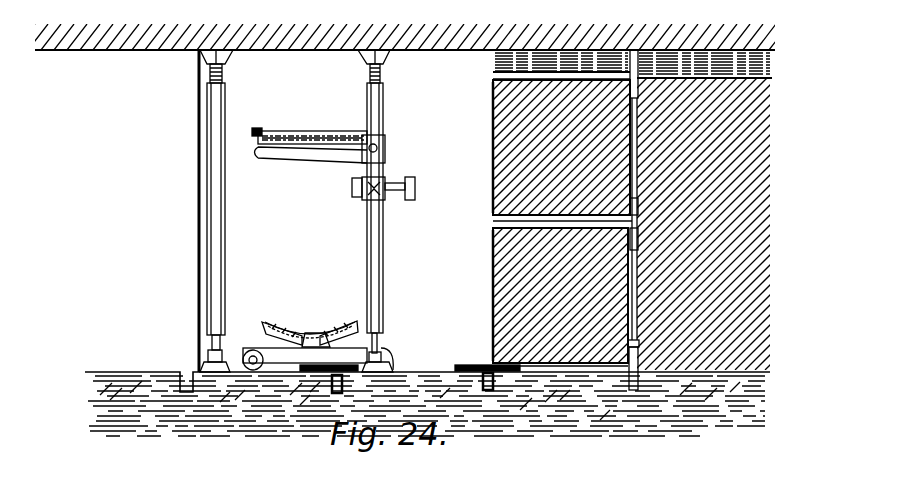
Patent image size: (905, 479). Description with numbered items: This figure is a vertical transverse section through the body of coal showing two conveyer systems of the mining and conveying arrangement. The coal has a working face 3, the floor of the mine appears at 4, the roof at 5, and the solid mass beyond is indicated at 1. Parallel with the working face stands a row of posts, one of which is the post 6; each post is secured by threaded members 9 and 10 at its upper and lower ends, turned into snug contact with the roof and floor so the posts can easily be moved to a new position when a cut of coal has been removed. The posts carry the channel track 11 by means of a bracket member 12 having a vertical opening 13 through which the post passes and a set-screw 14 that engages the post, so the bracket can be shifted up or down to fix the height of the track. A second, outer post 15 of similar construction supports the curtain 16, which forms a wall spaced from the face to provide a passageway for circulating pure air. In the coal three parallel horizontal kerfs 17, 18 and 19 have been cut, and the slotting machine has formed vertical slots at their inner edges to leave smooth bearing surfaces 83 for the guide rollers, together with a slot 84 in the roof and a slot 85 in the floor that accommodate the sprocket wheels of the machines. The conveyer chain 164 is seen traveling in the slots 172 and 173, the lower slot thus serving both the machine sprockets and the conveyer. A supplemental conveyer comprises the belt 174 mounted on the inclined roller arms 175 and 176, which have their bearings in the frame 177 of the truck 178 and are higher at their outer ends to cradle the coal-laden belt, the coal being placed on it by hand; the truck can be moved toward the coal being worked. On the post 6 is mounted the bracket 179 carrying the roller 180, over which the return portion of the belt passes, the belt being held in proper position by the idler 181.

The wall 1 is at (720, 203).
The working face 3 is at (513, 149).
The floor 4 is at (155, 371).
The roof 5 is at (123, 52).
The post 6 is at (375, 243).
The threaded member 9 is at (230, 81).
The threaded member 10 is at (207, 345).
The track 11 is at (415, 187).
The bracket member 12 is at (383, 199).
The vertical opening 13 is at (366, 199).
The set-screw 14 is at (352, 187).
The post 15 is at (216, 283).
The curtain 16 is at (197, 242).
The kerf 17 is at (493, 79).
The kerf 18 is at (503, 221).
The kerf 19 is at (565, 367).
The bearing surface 83 is at (493, 95).
The slot 84 is at (633, 62).
The slot 85 is at (633, 372).
The conveyer chain 164 is at (333, 375).
The slot 172 is at (490, 388).
The slot 173 is at (338, 393).
The belt 174 is at (297, 136).
The roller arm 175 is at (340, 324).
The roller arm 176 is at (277, 324).
The frame 177 is at (330, 321).
The truck 178 is at (270, 350).
The bracket 179 is at (297, 151).
The roller 180 is at (338, 130).
The idler 181 is at (260, 129).